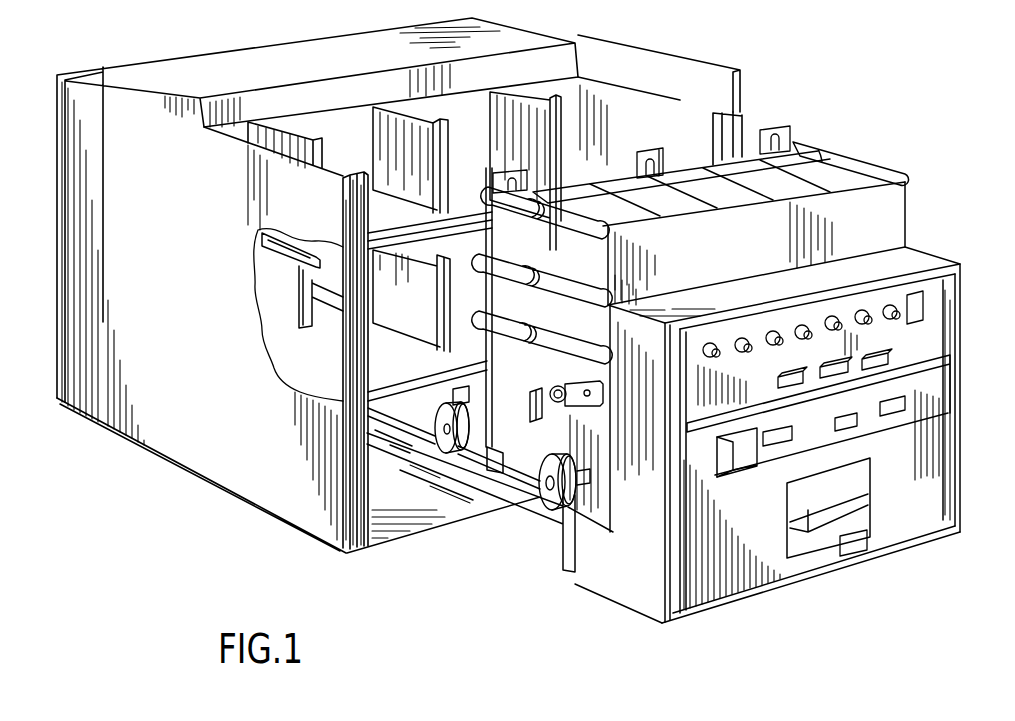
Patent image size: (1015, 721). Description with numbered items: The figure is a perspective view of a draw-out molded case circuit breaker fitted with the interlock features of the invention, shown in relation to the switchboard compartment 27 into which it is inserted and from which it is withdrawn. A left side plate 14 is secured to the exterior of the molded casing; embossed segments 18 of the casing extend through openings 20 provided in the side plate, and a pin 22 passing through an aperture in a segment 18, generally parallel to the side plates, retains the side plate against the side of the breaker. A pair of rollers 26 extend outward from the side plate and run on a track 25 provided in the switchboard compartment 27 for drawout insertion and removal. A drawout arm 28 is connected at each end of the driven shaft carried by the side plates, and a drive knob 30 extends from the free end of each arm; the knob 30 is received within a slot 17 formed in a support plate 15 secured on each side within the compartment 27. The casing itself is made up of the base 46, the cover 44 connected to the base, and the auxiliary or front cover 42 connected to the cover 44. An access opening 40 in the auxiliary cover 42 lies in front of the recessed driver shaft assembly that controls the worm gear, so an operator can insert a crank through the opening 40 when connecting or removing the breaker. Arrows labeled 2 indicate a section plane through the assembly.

The section line 2- 2 is at (436, 318).
The left side plate 14 is at (523, 383).
The support plate 15 is at (327, 367).
The slot 17 is at (298, 301).
The embossed segments 18 is at (531, 404).
The openings 20 is at (545, 411).
The pin 22 is at (552, 413).
The track 25 is at (535, 518).
The rollers 26 is at (443, 437).
The switchboard compartment 27 is at (152, 488).
The drawout arm 28 is at (596, 382).
The drive knob 30 is at (598, 342).
The access opening 40 is at (718, 442).
The auxiliary cover 42 is at (938, 257).
The cover 44 is at (885, 164).
The base 46 is at (806, 139).